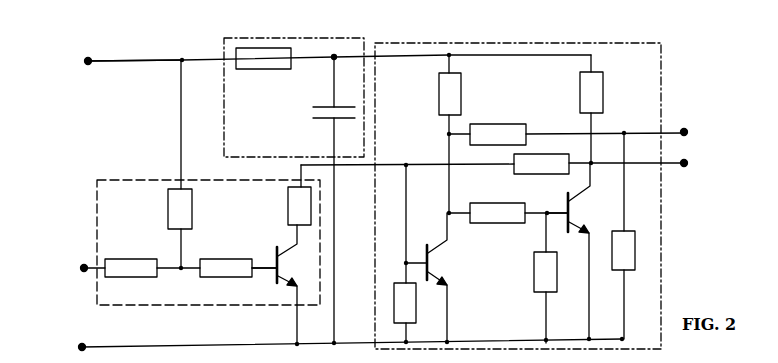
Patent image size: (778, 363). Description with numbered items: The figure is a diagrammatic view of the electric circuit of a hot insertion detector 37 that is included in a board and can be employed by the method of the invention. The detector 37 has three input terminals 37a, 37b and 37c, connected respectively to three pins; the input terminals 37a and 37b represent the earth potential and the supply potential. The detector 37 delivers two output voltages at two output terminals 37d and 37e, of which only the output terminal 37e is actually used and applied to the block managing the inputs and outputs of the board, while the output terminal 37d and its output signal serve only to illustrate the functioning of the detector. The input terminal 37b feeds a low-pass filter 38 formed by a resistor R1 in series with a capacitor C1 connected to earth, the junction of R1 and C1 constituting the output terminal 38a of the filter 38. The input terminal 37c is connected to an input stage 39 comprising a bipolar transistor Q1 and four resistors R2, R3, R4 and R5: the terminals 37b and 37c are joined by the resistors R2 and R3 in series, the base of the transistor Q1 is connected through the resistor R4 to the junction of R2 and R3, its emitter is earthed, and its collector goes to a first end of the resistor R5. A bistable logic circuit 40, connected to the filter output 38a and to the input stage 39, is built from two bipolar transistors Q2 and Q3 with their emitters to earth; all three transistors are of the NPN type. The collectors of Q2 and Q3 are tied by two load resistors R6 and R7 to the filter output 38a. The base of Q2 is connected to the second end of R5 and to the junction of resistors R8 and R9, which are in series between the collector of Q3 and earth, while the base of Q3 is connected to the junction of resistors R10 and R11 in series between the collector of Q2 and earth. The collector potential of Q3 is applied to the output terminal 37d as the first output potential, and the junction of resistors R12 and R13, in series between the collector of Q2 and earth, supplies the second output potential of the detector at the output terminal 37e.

The detector 37 is at (128, 54).
The input terminal 37a is at (80, 346).
The input terminal 37b is at (85, 63).
The input terminal 37c is at (80, 266).
The output terminal 37d is at (686, 168).
The output terminal 37e is at (686, 128).
The low-pass filter 38 is at (222, 52).
The output terminal of the filter 38a is at (338, 54).
The input stage 39 is at (96, 192).
The bistable logic circuit 40 is at (500, 43).
The resistor R1 is at (268, 71).
The capacitor C1 is at (325, 121).
The resistor R2 is at (168, 212).
The resistor R3 is at (135, 279).
The resistor R4 is at (233, 279).
The resistor R5 is at (288, 212).
The bipolar transistor Q1 is at (275, 277).
The load resistor R6 is at (440, 96).
The load resistor R7 is at (580, 98).
The resistor R8 is at (526, 175).
The resistor R9 is at (397, 303).
The resistor R10 is at (502, 202).
The resistor R11 is at (534, 277).
The resistor R12 is at (481, 123).
The resistor R13 is at (633, 268).
The bipolar transistor Q2 is at (432, 277).
The bipolar transistor Q3 is at (572, 251).